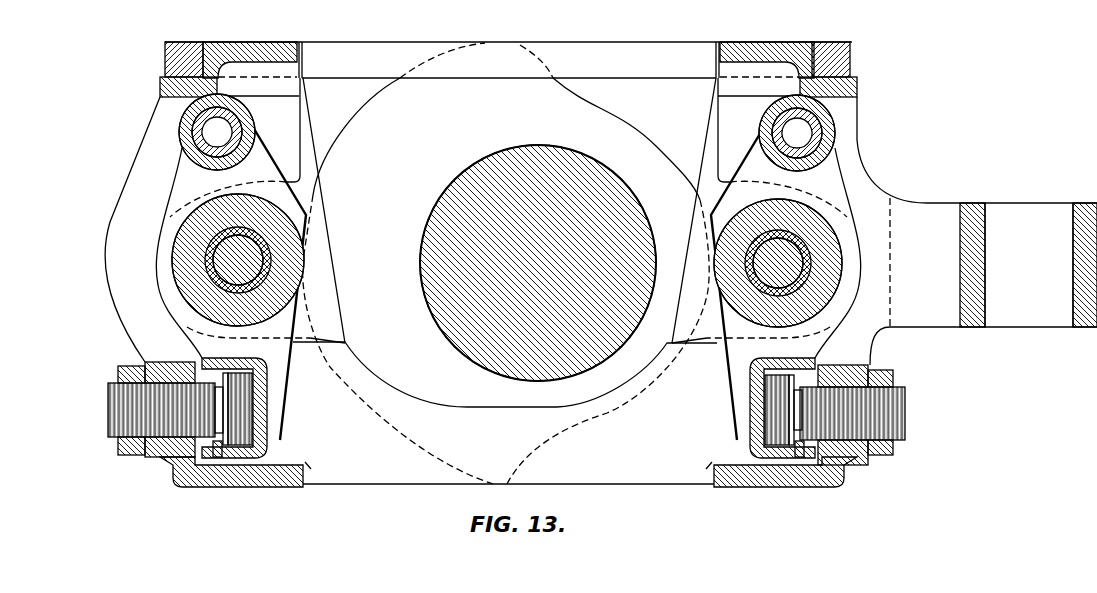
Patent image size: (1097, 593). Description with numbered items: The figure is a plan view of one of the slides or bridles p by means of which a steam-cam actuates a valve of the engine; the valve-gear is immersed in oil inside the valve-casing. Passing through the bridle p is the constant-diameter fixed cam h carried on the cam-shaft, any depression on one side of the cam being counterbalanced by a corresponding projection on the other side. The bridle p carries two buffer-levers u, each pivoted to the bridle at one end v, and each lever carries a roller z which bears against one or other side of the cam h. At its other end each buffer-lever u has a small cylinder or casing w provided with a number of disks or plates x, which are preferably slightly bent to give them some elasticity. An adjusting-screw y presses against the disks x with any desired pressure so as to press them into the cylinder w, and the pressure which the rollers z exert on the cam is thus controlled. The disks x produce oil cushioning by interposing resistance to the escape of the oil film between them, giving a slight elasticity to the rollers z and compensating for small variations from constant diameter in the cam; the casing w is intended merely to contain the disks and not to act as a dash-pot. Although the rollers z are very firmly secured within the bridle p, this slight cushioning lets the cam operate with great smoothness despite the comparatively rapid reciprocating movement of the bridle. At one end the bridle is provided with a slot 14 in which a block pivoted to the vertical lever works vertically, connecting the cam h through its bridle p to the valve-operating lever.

The fixed cam h is at (623, 152).
The bridle p is at (506, 339).
The buffer-lever u is at (180, 177).
The pivot v is at (212, 132).
The roller z is at (283, 253).
The cylinder or casing w is at (259, 362).
The disks or plates x is at (243, 393).
The adjusting-screw y is at (122, 415).
The slot 14 is at (1040, 215).